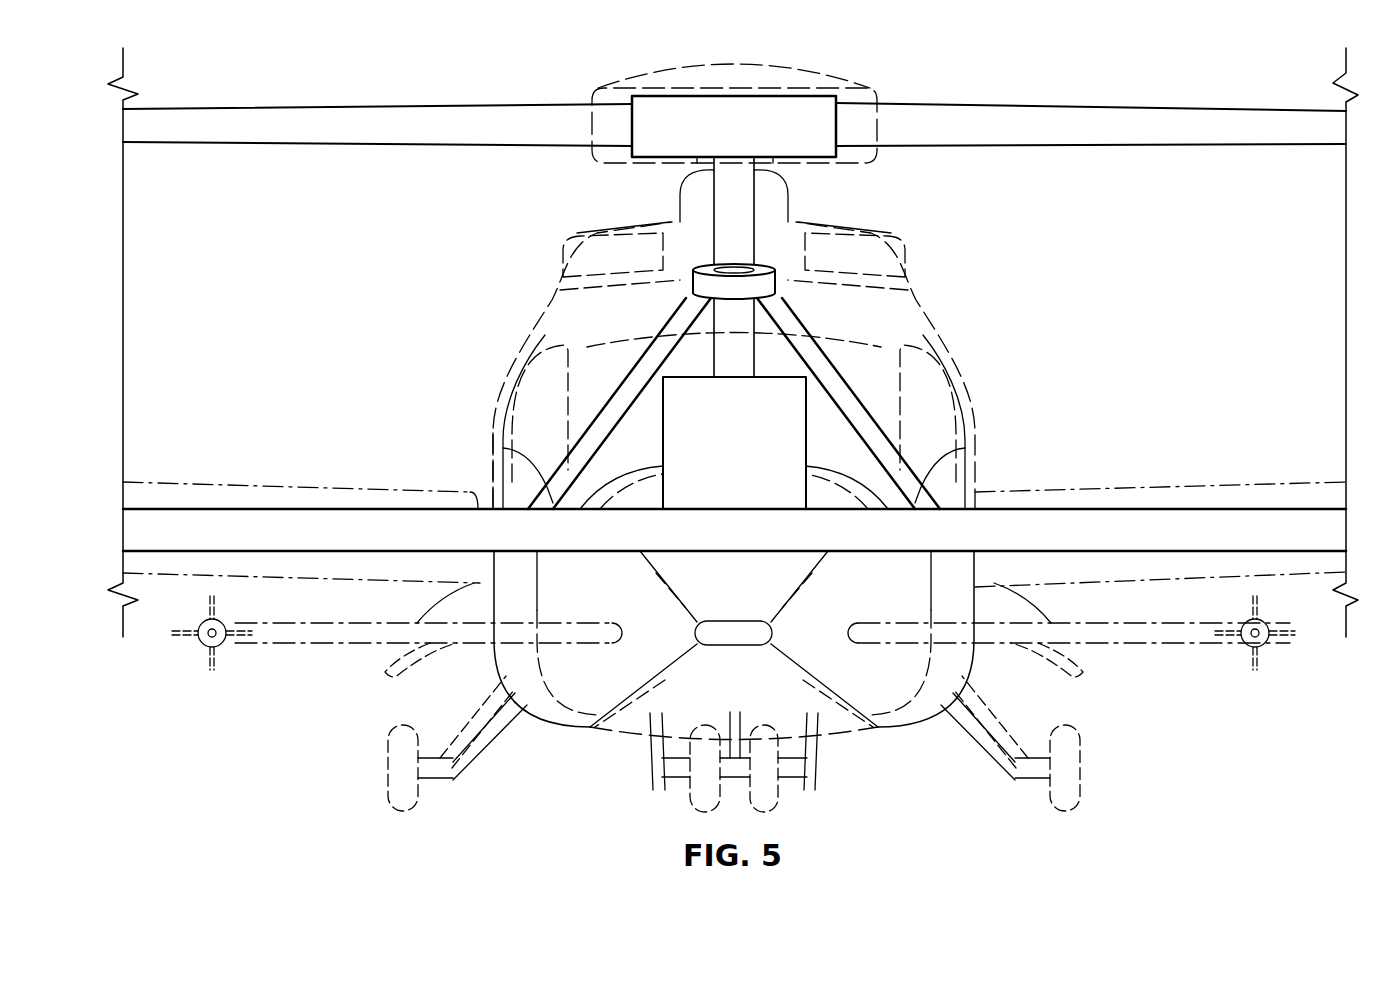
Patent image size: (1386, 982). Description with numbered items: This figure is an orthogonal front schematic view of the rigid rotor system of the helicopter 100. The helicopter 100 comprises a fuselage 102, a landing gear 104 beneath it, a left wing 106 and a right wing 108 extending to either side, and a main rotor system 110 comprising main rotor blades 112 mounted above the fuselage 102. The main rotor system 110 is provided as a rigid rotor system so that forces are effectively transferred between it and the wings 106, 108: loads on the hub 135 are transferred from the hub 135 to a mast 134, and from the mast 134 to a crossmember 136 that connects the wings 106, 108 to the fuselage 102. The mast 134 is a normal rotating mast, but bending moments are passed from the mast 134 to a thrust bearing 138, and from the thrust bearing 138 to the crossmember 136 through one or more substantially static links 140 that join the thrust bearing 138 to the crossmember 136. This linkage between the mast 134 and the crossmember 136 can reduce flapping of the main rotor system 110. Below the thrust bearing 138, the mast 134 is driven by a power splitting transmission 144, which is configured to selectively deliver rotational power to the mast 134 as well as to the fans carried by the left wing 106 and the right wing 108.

The helicopter 100 is at (1029, 77).
The fuselage 102 is at (855, 750).
The landing gear 104 is at (1080, 778).
The left wing 106 is at (1153, 488).
The right wing 108 is at (318, 488).
The main rotor system 110 is at (848, 77).
The main rotor blades 112 is at (1143, 106).
The mast 134 is at (713, 208).
The hub 135 is at (670, 95).
The crossmember 136 is at (1233, 505).
The thrust bearing 138 is at (777, 282).
The static links 140 is at (502, 448).
The power splitting transmission 144 is at (756, 457).